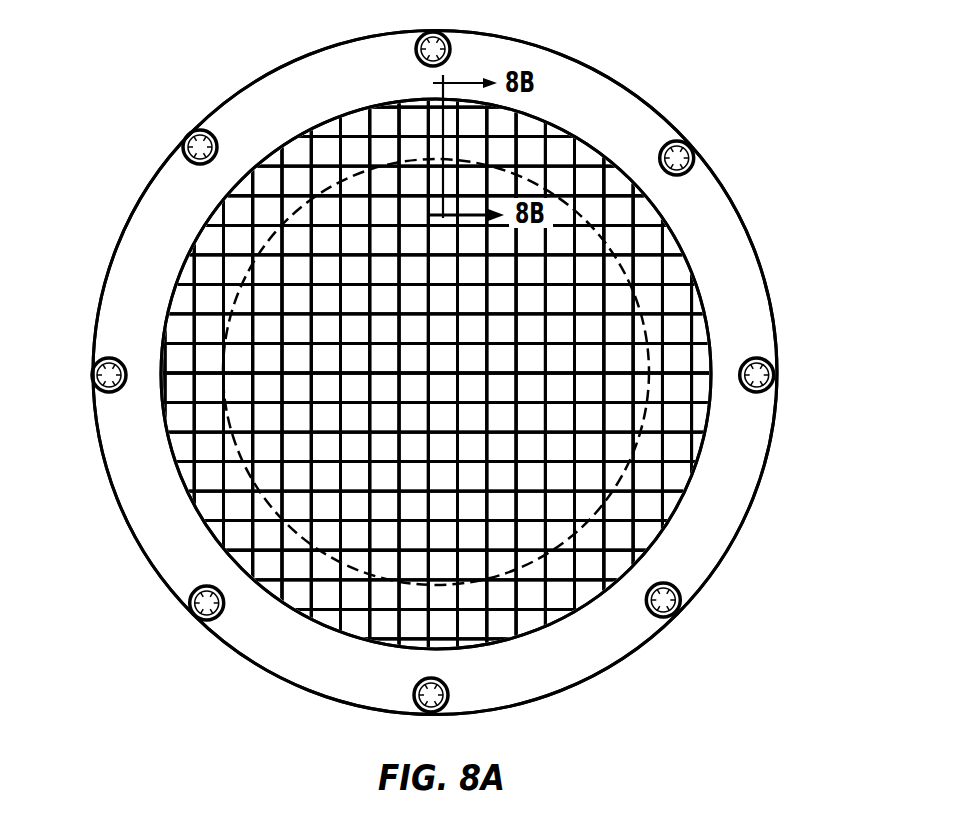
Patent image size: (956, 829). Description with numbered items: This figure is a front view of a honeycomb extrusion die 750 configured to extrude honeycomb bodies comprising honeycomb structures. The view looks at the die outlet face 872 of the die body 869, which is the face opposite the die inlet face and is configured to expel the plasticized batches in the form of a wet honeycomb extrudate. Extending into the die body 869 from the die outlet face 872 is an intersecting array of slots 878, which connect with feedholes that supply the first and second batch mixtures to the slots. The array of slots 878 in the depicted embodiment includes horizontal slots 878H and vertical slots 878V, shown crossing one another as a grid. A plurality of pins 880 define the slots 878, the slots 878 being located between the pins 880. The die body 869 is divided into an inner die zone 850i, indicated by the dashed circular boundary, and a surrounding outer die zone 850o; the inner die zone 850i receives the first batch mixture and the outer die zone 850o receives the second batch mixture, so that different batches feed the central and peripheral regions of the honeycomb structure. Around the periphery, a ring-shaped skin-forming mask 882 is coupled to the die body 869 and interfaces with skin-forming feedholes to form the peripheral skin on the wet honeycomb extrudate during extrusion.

The honeycomb extrusion die 750 is at (196, 93).
The skin-forming mask 882 is at (157, 163).
The outer die zone 850o is at (197, 240).
The die outlet face 872 is at (165, 327).
The pins 880 is at (233, 507).
The vertical slots 878V is at (607, 177).
The horizontal slots 878H is at (678, 372).
The inner die zone 850i is at (517, 321).
The die body 869 is at (682, 447).
The slots 878 is at (648, 497).